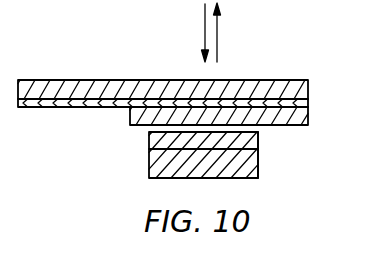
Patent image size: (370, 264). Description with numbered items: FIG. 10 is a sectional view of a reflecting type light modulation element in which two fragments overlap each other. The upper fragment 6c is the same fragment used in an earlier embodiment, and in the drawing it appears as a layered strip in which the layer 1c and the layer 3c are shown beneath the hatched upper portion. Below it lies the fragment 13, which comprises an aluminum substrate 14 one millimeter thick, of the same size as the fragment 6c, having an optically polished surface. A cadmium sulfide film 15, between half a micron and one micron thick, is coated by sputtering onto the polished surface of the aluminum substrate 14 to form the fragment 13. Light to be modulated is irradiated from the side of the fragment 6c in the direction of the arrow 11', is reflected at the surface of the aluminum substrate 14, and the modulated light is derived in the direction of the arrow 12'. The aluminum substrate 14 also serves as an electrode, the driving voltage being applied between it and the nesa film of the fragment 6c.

The fragment 6c is at (288, 85).
The intermediate adhesive layer 1c is at (306, 100).
The lower layer of laminate 3c is at (298, 120).
The fragment 13 is at (158, 178).
The aluminum substrate 14 is at (167, 158).
The cadmium sulfide film 15 is at (259, 142).
The arrow 11' is at (182, 33).
The arrow 12' is at (240, 32).